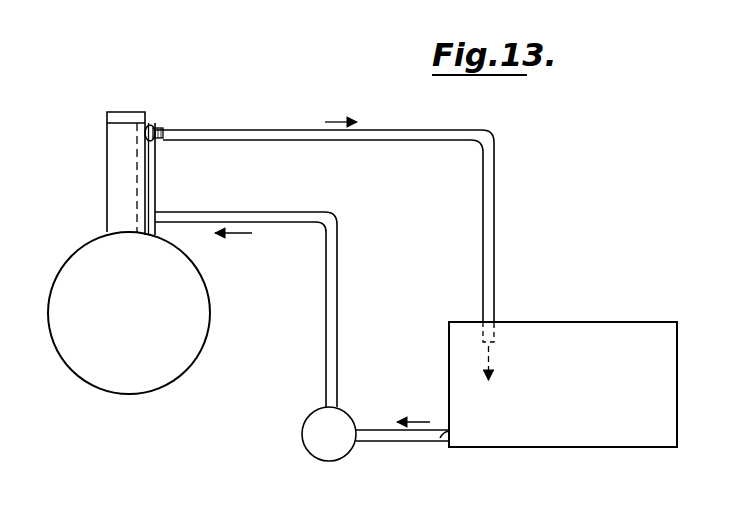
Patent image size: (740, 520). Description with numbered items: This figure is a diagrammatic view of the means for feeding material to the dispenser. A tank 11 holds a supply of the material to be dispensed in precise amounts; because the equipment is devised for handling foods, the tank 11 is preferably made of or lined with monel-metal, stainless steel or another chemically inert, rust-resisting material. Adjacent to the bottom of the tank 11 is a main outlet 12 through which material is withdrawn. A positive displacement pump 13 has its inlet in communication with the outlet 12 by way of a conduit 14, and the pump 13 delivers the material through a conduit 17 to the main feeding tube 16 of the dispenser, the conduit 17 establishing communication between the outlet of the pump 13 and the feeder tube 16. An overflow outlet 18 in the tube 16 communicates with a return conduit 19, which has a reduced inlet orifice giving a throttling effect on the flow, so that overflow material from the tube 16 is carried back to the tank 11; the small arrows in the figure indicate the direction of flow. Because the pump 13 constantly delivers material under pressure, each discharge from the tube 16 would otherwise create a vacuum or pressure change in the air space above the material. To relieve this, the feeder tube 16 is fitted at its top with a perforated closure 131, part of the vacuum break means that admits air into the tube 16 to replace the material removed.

The tank 11 is at (600, 319).
The main outlet 12 is at (458, 432).
The positive displacement pump 13 is at (344, 457).
The conduit 14 is at (408, 442).
The main feeding tube 16 is at (158, 187).
The conduit 17 is at (333, 282).
The overflow outlet 18 is at (157, 128).
The return conduit 19 is at (264, 132).
The perforated closure 131 is at (143, 108).